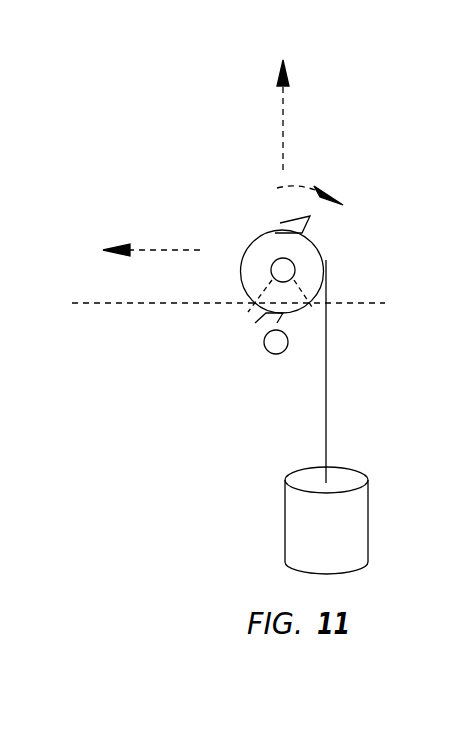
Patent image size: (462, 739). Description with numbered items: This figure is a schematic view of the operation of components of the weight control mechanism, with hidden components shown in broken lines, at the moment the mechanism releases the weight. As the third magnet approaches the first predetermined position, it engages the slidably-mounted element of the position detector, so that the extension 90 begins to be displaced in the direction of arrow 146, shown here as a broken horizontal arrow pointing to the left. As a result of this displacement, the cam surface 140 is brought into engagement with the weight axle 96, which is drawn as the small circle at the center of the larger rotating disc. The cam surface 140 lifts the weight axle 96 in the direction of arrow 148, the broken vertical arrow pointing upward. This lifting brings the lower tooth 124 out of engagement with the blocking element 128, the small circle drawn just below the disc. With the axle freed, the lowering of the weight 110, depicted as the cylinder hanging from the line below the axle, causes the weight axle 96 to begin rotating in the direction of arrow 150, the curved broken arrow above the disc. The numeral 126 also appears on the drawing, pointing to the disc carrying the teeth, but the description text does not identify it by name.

The extension 90 is at (132, 305).
The weight axle 96 is at (271, 266).
The weight 110 is at (357, 535).
The lower tooth 124 is at (283, 222).
The rotor 126 is at (315, 246).
The blocking element 128 is at (272, 350).
The cam surface 140 is at (326, 282).
The arrow 146 is at (143, 250).
The arrow 148 is at (283, 122).
The arrow 150 is at (315, 190).